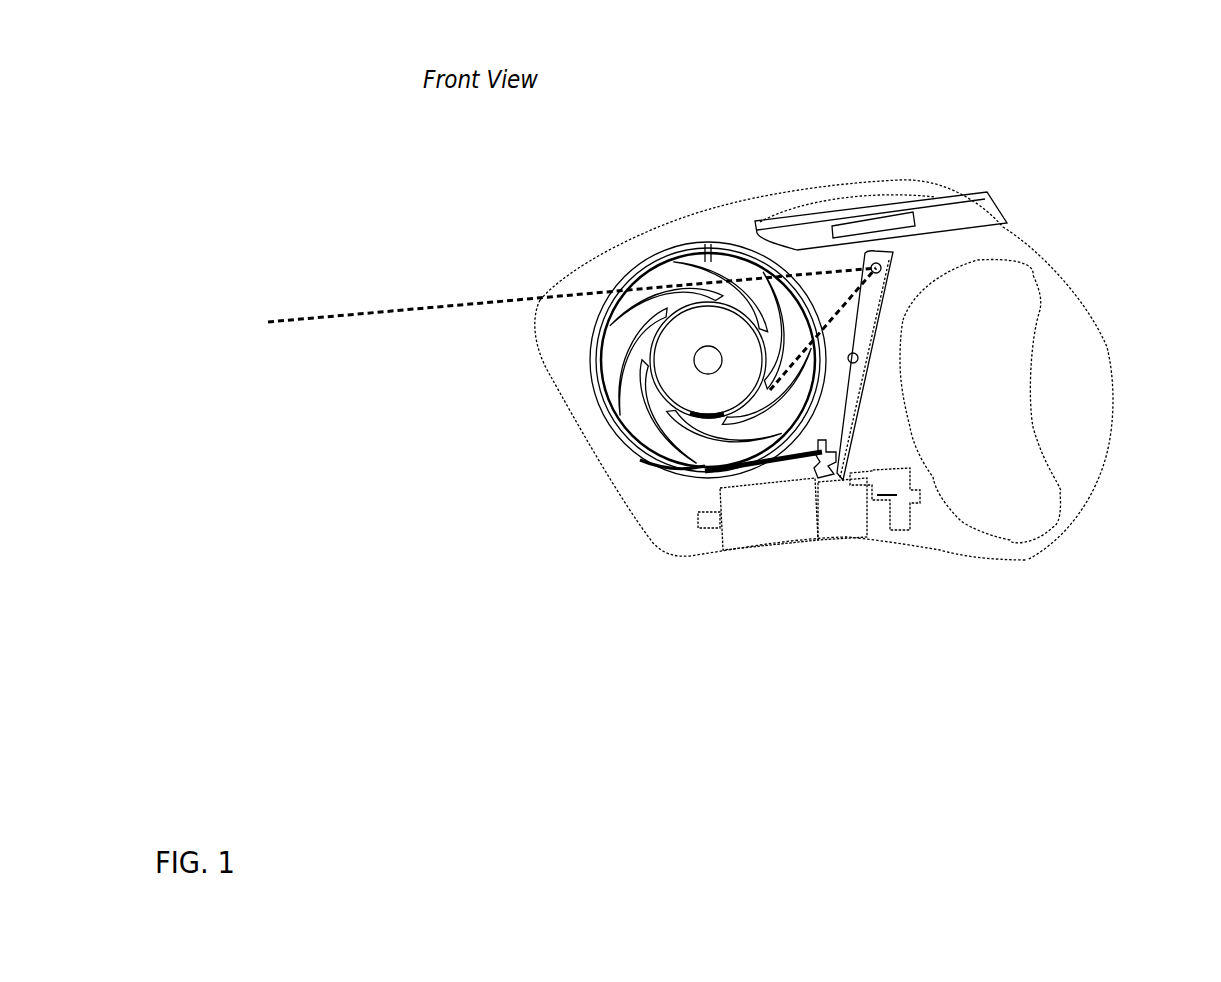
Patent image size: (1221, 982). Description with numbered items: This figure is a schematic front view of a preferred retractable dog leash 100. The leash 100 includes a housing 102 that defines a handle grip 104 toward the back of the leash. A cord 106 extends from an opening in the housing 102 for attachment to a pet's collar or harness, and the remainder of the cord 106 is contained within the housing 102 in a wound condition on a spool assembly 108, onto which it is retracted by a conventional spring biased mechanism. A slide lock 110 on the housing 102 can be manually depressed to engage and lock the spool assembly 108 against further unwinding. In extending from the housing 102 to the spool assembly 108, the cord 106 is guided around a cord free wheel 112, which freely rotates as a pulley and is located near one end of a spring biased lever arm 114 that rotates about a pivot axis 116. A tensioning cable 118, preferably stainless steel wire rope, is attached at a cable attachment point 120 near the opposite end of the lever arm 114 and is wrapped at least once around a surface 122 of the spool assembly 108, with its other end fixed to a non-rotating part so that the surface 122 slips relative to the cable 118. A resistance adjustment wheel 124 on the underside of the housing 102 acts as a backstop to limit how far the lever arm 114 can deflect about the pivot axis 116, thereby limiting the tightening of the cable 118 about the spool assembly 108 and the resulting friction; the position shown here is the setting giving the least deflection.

The dog leash 100 is at (1142, 62).
The housing 102 is at (713, 205).
The handle grip 104 is at (1098, 442).
The cord 106 is at (452, 312).
The spool assembly 108 is at (633, 417).
The slide lock 110 is at (933, 197).
The cord free wheel 112 is at (890, 263).
The lever arm 114 is at (886, 302).
The pivot axis 116 is at (872, 358).
The cable 118 is at (673, 478).
The cable attachment point 120 is at (843, 442).
The surface 122 is at (599, 301).
The resistance adjustment wheel 124 is at (775, 528).